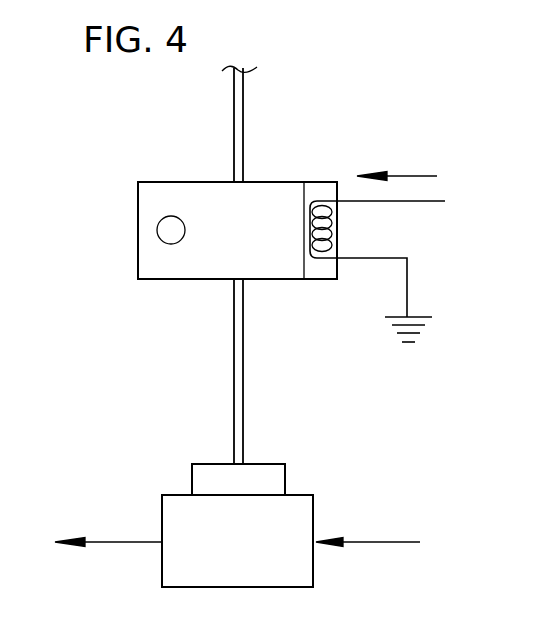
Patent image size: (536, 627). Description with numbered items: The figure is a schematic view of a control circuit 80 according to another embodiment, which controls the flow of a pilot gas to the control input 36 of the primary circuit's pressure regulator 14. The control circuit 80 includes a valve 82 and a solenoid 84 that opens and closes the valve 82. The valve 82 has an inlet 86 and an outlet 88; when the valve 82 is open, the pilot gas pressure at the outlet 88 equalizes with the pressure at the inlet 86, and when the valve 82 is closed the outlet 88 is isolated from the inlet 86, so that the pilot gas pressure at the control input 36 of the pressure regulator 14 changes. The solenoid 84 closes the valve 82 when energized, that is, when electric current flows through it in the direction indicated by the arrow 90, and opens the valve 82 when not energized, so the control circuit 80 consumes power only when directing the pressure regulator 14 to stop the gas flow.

The control circuit 80 is at (120, 169).
The valve 82 is at (138, 242).
The solenoid 84 is at (335, 229).
The inlet 86 is at (233, 181).
The outlet 88 is at (234, 280).
The arrow 90 is at (405, 176).
The control input 36 is at (192, 483).
The pressure regulator 14 is at (227, 546).